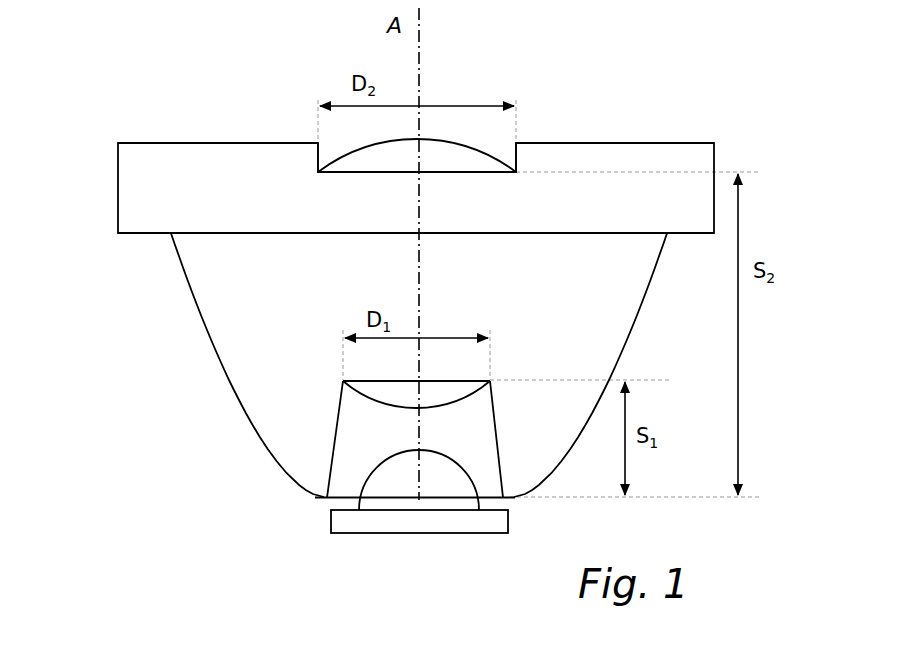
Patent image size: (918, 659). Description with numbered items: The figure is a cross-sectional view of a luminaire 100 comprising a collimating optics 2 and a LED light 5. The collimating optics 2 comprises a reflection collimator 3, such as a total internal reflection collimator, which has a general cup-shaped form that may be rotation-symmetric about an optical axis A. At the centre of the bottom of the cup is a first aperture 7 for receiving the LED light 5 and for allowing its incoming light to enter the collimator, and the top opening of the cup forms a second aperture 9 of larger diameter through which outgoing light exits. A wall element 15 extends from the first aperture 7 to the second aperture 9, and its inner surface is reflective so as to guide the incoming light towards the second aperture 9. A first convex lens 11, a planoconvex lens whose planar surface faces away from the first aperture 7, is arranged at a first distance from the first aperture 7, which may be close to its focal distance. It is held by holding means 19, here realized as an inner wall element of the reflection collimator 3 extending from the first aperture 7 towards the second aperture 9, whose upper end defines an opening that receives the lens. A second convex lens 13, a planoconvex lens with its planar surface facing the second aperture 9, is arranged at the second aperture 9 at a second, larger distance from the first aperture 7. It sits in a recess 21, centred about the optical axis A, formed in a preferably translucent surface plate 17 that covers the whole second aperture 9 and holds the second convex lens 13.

The luminaire 100 is at (683, 85).
The collimating optics 2 is at (152, 358).
The reflection collimator 3 is at (250, 428).
The LED light 5 is at (331, 528).
The first aperture 7 is at (340, 496).
The second aperture 9 is at (377, 233).
The first convex lens 11 is at (352, 398).
The second convex lens 13 is at (462, 157).
The wall element 15 is at (212, 345).
The surface plate 17 is at (205, 152).
The holding means 19 is at (501, 450).
The recess 21 is at (318, 171).